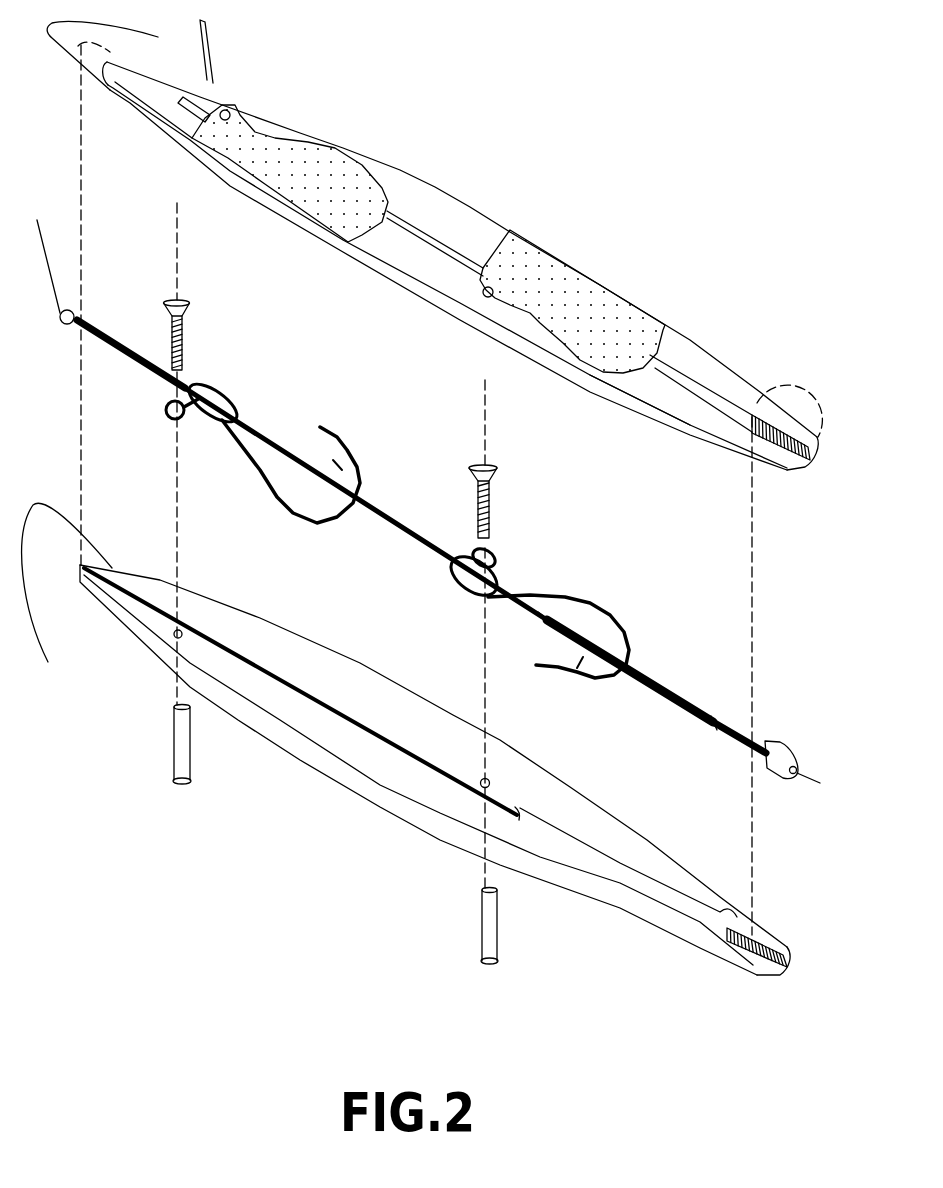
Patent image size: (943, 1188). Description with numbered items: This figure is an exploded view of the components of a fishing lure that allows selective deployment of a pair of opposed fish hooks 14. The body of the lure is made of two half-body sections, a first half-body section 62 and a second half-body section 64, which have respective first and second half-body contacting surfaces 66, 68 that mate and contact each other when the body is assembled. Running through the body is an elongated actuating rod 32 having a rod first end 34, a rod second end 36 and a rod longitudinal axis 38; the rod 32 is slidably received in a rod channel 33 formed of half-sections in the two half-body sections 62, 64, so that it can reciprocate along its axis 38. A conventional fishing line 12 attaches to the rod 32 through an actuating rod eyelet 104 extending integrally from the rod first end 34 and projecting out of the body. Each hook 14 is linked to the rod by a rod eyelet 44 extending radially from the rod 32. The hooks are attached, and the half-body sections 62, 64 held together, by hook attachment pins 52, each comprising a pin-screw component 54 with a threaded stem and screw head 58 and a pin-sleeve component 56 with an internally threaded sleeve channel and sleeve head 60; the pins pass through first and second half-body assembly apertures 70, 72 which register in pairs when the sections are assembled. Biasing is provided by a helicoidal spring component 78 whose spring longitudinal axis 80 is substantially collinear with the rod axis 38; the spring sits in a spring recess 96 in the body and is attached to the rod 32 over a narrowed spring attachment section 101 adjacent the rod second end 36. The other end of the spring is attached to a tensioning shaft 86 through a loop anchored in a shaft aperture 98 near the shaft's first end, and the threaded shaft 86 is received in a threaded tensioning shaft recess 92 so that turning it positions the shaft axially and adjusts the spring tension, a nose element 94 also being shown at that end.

The fishing line 12 is at (47, 247).
The fish hook 14 is at (417, 512).
The actuating rod 32 is at (433, 532).
The rod channel 33 is at (337, 717).
The rod first end 34 is at (105, 322).
The rod second end 36 is at (560, 643).
The rod longitudinal axis 38 is at (60, 323).
The rod eyelet 44 is at (197, 390).
The hook attachment pin 52 is at (344, 654).
The pin-screw component 54 is at (349, 411).
The pin-sleeve component 56 is at (323, 865).
The screw head 58 is at (470, 463).
The sleeve head 60 is at (493, 967).
The first half-body section 62 is at (406, 761).
The second half-body section 64 is at (390, 143).
The first half-body contacting surface 66 is at (343, 683).
The second half-body contacting surface 68 is at (465, 215).
The first half-body assembly aperture 70 is at (173, 632).
The second half-body assembly aperture 72 is at (230, 112).
The spring component 78 is at (673, 687).
The spring longitudinal axis 80 is at (627, 660).
The tensioning shaft 86 is at (742, 728).
The tensioning shaft recess 92 is at (777, 433).
The nose cone 94 is at (770, 775).
The spring recess 96 is at (692, 385).
The shaft aperture 98 is at (716, 722).
The spring attachment section 101 is at (545, 630).
The actuating rod eyelet 104 is at (97, 302).